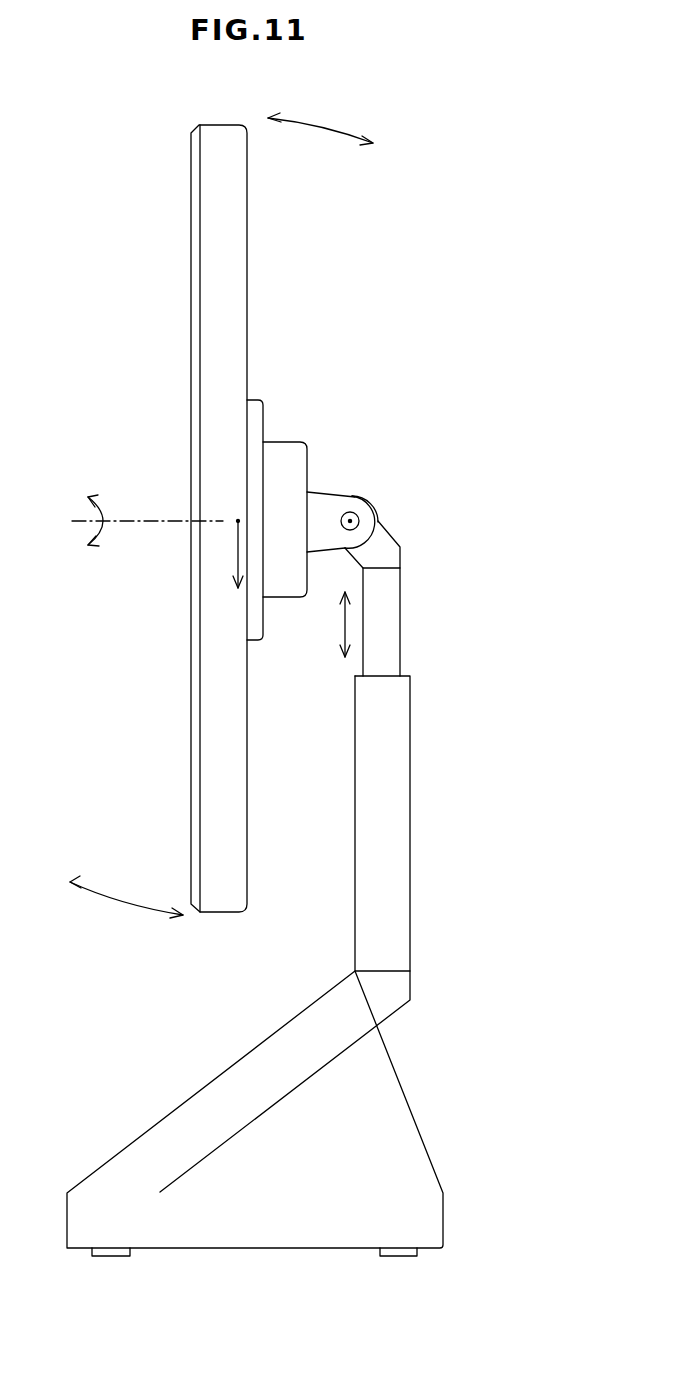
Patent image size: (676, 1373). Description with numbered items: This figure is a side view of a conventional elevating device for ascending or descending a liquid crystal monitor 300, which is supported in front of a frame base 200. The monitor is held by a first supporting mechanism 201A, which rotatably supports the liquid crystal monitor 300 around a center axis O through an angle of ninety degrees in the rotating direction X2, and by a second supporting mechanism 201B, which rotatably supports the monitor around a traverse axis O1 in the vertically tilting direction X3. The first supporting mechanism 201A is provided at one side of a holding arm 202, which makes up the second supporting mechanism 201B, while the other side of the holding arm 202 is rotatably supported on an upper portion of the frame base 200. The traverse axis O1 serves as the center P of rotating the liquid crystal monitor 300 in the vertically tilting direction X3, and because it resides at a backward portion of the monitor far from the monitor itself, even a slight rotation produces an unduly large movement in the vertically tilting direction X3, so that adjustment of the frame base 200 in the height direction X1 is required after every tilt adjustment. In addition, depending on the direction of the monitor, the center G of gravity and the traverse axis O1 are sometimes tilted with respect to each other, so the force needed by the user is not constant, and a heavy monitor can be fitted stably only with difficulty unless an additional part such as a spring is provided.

The liquid crystal monitor 300 is at (191, 302).
The frame base 200 is at (411, 768).
The first supporting mechanism 201A is at (282, 442).
The second supporting mechanism 201B is at (350, 496).
The holding arm 202 is at (313, 502).
The center of rotating the liquid crystal monitor P is at (364, 499).
The traverse axis O1 is at (360, 521).
The center axis O is at (139, 522).
The center of gravity G is at (238, 570).
The height direction X1 is at (328, 624).
The rotating direction X2 is at (94, 540).
The vertically tilting direction X3 is at (221, 519).